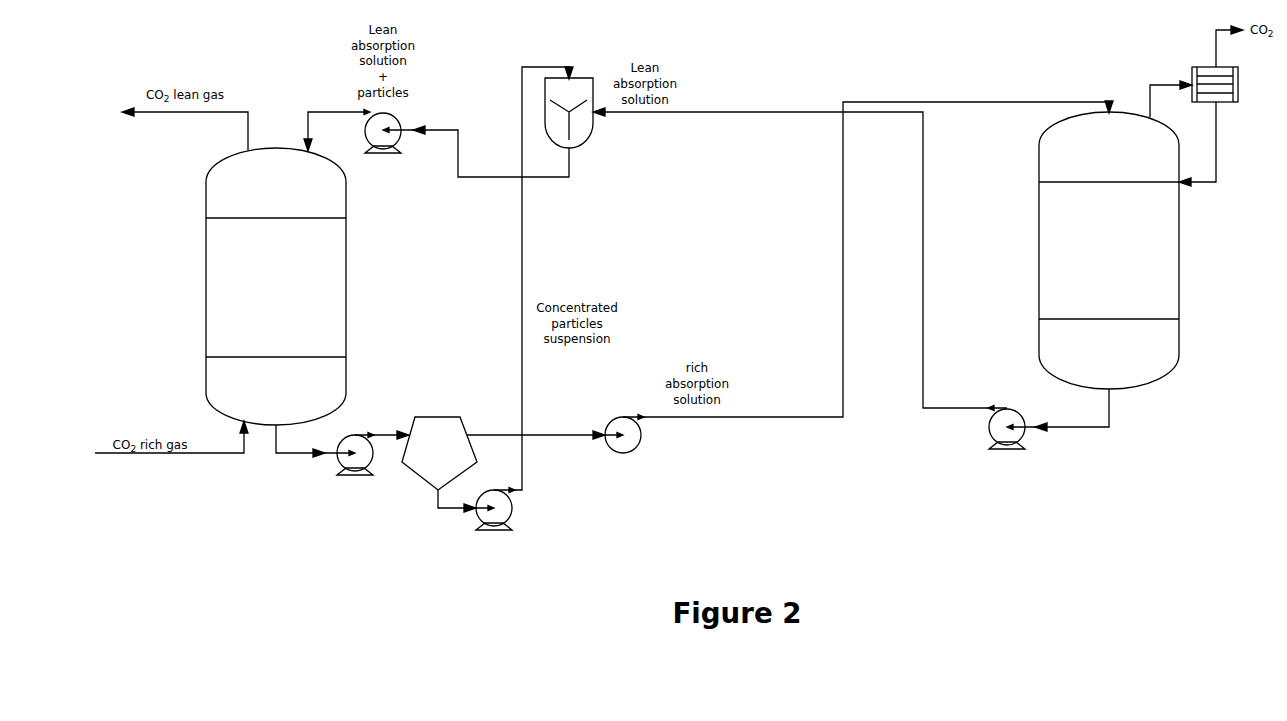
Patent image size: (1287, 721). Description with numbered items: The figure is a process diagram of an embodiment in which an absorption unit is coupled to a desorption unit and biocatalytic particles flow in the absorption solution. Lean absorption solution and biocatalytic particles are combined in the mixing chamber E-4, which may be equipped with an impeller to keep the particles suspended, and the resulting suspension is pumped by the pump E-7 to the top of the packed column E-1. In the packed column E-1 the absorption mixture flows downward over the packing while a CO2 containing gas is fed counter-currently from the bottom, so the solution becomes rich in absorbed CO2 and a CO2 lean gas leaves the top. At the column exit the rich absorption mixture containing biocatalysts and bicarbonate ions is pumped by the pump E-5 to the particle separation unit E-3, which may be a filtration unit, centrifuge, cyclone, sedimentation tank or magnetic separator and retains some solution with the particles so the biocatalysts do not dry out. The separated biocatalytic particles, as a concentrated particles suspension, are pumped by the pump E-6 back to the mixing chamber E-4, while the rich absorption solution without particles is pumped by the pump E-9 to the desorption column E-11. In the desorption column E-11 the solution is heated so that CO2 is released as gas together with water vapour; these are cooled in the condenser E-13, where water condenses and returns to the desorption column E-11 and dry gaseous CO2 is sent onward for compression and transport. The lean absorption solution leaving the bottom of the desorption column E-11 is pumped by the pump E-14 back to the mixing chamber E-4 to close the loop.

The packed column E-1 is at (297, 286).
The particle separation unit E-3 is at (439, 453).
The mixing chamber E-4 is at (569, 121).
The pump E-5 is at (355, 466).
The pump E-6 is at (494, 526).
The pump E-7 is at (383, 150).
The pump E-9 is at (623, 448).
The desorption column E-11 is at (1134, 250).
The condenser E-13 is at (1234, 84).
The pump E-14 is at (1007, 446).